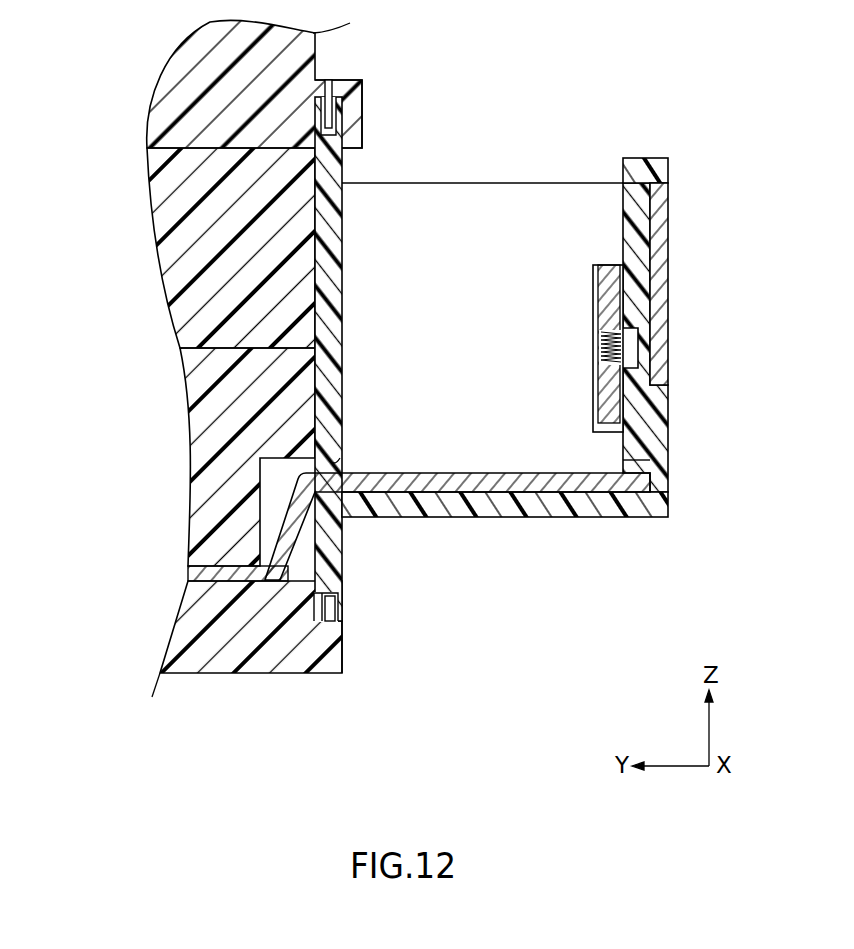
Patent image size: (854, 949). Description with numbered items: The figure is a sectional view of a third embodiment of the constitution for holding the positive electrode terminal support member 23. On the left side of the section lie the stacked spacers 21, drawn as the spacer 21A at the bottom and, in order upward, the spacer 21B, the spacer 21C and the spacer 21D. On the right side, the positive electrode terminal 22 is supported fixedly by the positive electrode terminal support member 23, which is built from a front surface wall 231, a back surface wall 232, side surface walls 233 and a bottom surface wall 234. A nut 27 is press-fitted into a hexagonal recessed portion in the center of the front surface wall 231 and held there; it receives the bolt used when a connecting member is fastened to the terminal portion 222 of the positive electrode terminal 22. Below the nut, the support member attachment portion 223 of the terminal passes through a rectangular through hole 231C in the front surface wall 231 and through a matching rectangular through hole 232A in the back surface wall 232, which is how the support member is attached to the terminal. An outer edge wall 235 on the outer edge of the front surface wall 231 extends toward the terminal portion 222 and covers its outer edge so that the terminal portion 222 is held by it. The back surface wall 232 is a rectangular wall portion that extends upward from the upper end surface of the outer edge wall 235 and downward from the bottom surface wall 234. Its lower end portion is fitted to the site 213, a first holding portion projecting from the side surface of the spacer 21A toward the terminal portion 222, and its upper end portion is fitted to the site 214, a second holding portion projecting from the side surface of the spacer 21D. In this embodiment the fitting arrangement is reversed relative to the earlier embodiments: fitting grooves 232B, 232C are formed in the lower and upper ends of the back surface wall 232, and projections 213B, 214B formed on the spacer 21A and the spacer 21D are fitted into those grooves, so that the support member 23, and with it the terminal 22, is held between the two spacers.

The spacer 21 is at (227, 369).
The spacer 21A is at (198, 612).
The spacer 21B is at (200, 466).
The spacer 21C is at (172, 245).
The spacer 21D is at (175, 78).
The second holding portion 214 is at (340, 84).
The projection portion 214B is at (331, 110).
The first holding portion 213 is at (320, 674).
The projection portion 213B is at (330, 614).
The positive electrode terminal support member 23 is at (550, 352).
The front surface wall 231 is at (609, 298).
The through hole 231C is at (625, 470).
The back surface wall 232 is at (392, 352).
The through hole 232A is at (341, 466).
The fitting groove 232B is at (330, 602).
The fitting groove 232C is at (330, 130).
The side surface wall 233 is at (528, 183).
The bottom surface wall 234 is at (624, 512).
The outer edge wall 235 is at (671, 178).
The positive electrode terminal 22 is at (525, 381).
The terminal portion 222 is at (665, 235).
The support member attachment portion 223 is at (505, 497).
The nut 27 is at (603, 302).